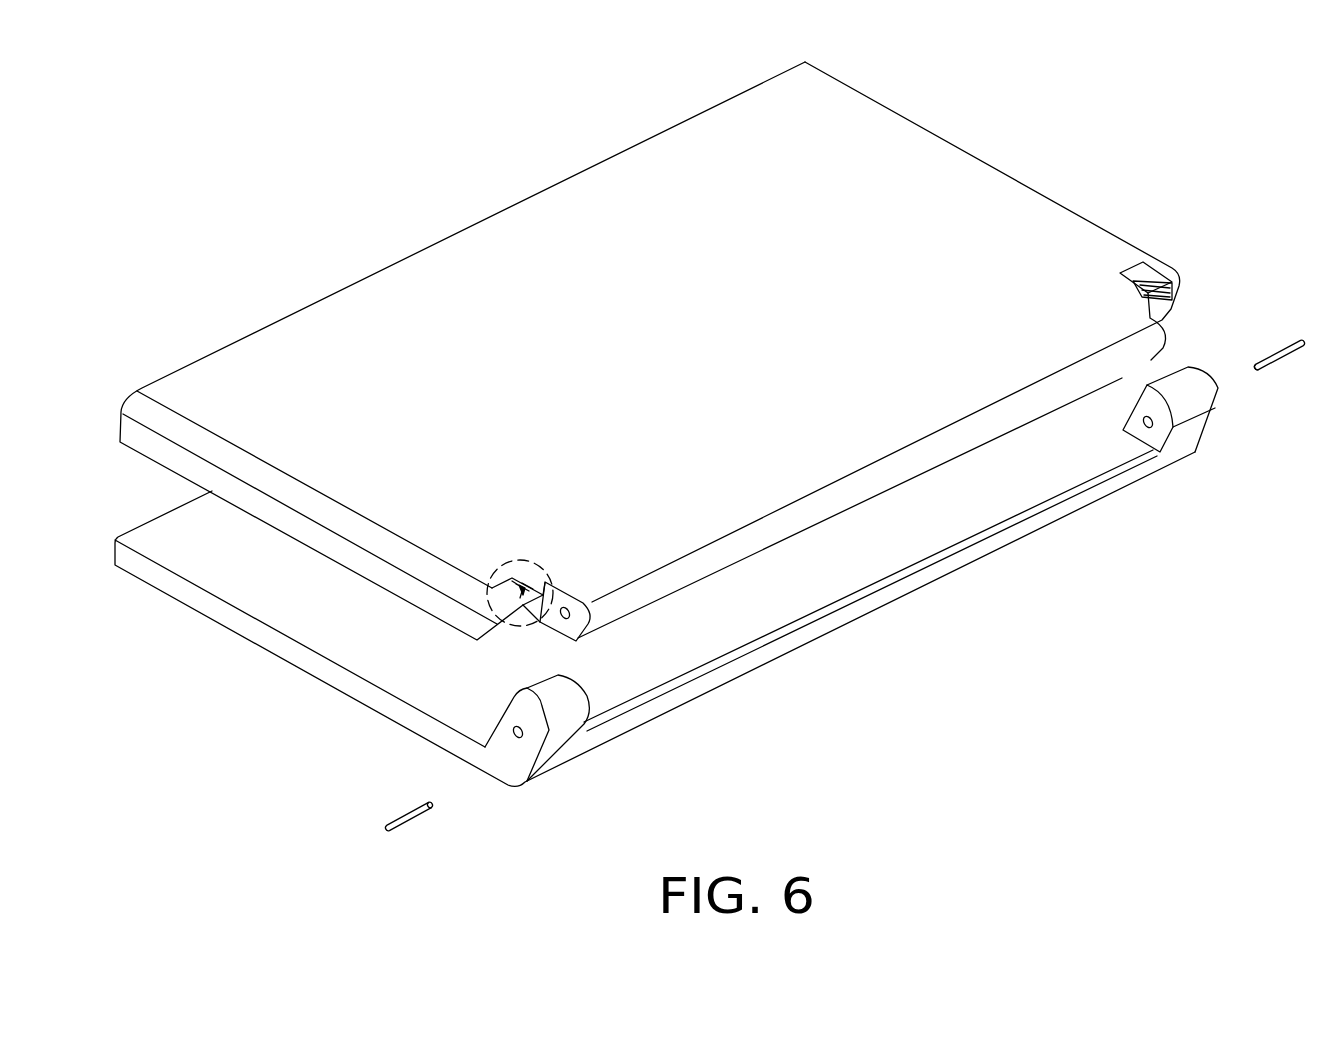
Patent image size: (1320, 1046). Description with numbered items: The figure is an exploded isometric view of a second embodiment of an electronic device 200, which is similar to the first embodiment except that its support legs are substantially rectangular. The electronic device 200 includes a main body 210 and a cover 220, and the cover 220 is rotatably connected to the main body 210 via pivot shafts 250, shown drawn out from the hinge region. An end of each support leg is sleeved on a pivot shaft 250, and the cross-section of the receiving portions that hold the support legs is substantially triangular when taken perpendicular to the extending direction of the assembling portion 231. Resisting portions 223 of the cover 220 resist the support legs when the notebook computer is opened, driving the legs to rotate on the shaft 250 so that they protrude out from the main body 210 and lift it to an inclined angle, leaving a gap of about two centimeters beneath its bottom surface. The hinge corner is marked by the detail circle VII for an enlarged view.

The electronic device 200 is at (666, 106).
The main body 210 is at (247, 385).
The cover 220 is at (245, 583).
The resisting portion 223 is at (560, 705).
The assembling portion 231 is at (604, 603).
The pivot shaft 250 is at (423, 815).
The detail view indicator VII is at (487, 608).